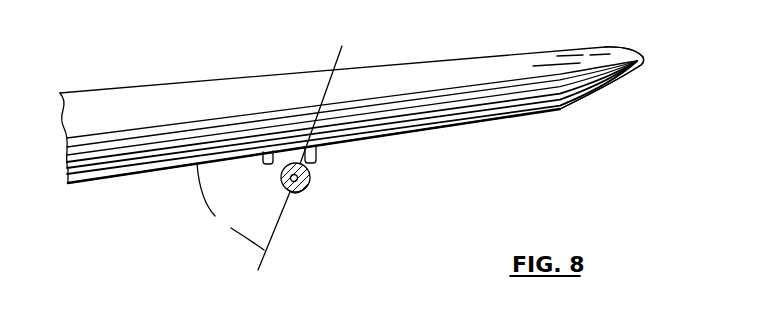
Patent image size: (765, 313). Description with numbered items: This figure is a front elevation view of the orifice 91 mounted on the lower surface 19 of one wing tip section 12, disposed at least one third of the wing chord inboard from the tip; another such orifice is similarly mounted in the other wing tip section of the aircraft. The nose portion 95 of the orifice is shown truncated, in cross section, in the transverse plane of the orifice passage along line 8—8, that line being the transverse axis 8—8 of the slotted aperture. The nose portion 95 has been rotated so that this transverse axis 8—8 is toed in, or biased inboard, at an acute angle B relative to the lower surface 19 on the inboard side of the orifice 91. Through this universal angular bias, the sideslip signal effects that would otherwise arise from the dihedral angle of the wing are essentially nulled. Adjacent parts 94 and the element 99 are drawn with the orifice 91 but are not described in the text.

The transverse axis 8 is at (300, 156).
The wing tip section 12 is at (540, 92).
The lower surface 19 is at (462, 125).
The orifice 91 is at (309, 181).
The brackets 94 is at (271, 165).
The nose portion 95 is at (304, 189).
The retaining member 99 is at (297, 193).
The acute angle B is at (230, 207).